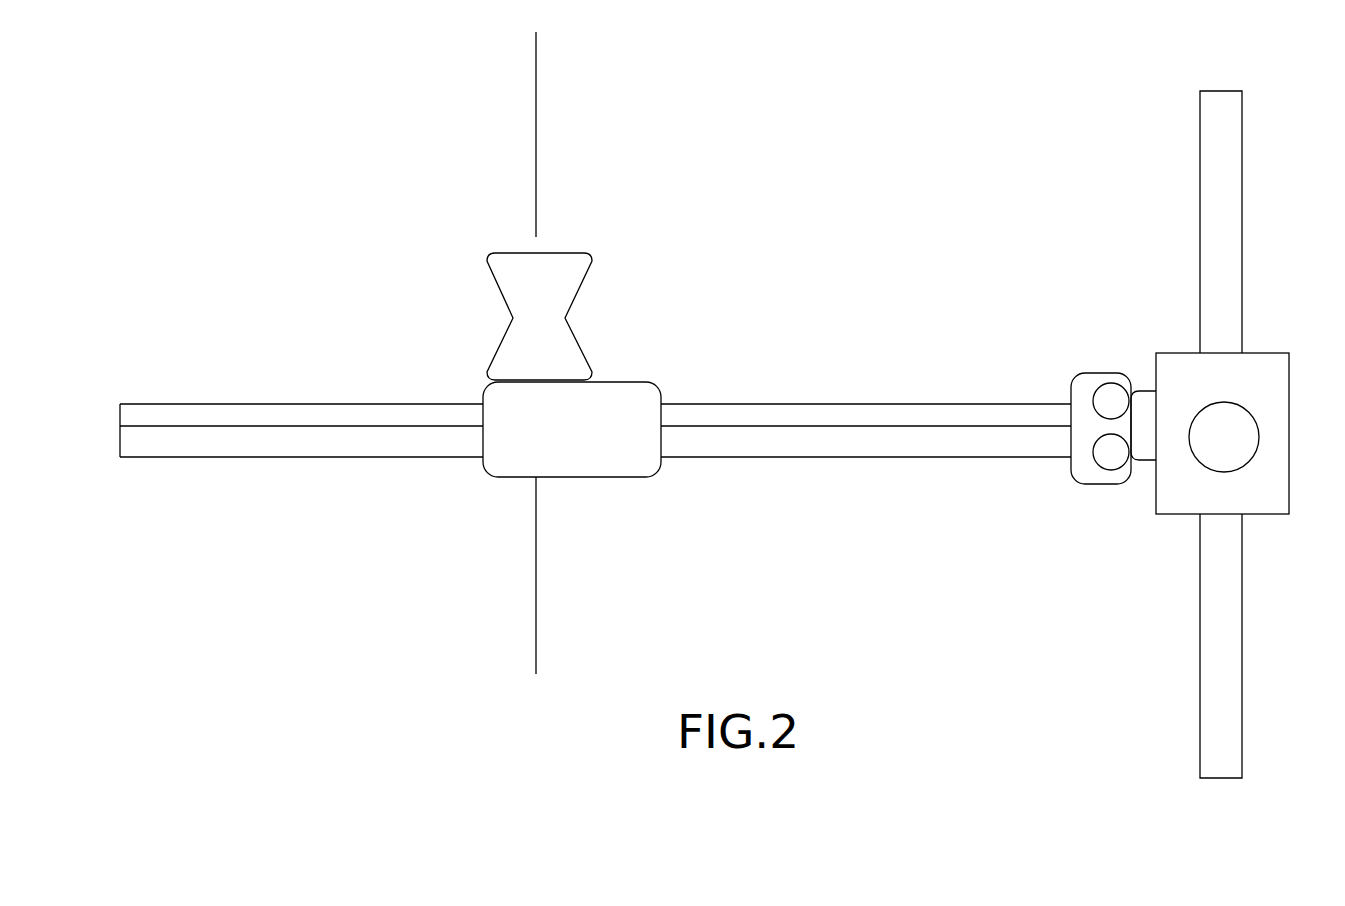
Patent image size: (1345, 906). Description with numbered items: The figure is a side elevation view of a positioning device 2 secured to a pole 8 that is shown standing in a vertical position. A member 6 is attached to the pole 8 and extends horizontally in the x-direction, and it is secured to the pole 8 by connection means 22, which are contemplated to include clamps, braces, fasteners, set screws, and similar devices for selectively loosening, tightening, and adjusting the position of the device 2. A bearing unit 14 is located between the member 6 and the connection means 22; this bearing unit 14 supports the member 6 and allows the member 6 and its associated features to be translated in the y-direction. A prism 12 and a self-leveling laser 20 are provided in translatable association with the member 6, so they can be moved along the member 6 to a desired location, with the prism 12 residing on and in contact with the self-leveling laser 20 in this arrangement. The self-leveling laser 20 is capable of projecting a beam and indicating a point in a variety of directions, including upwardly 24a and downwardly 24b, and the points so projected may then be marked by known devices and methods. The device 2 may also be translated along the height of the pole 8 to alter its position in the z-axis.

The positioning device 2 is at (192, 510).
The member 6 is at (173, 412).
The pole 8 is at (1171, 190).
The prism 12 is at (578, 252).
The bearing unit 14 is at (1060, 352).
The self-leveling laser 20 is at (603, 496).
The connection means 22 is at (1278, 490).
The upward direction 24a is at (496, 176).
The downward direction 24b is at (496, 631).